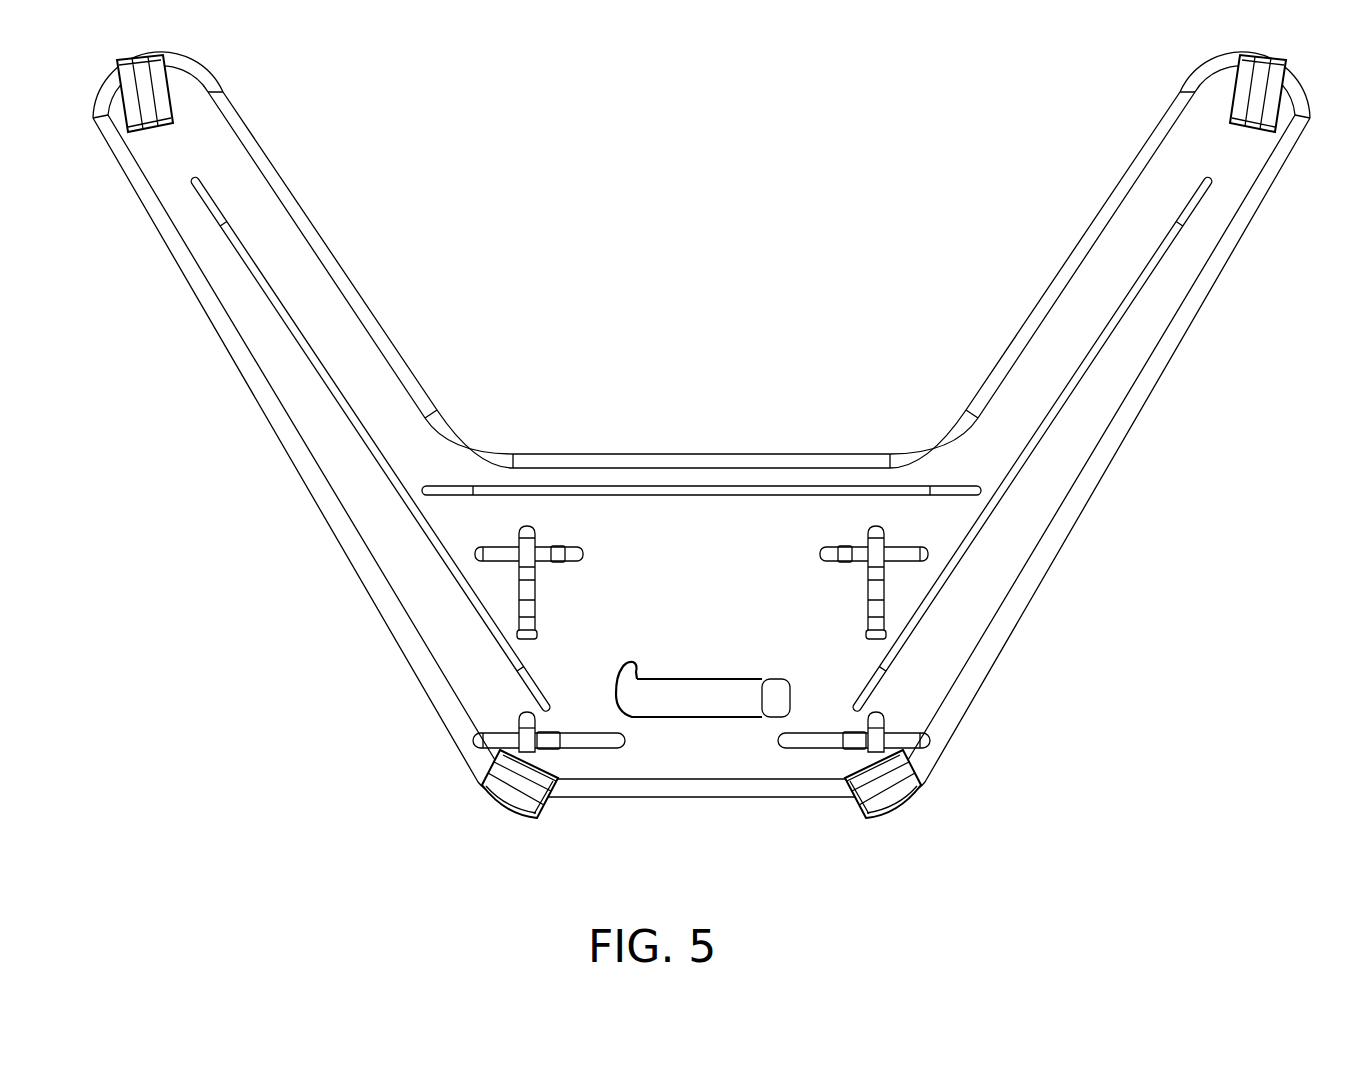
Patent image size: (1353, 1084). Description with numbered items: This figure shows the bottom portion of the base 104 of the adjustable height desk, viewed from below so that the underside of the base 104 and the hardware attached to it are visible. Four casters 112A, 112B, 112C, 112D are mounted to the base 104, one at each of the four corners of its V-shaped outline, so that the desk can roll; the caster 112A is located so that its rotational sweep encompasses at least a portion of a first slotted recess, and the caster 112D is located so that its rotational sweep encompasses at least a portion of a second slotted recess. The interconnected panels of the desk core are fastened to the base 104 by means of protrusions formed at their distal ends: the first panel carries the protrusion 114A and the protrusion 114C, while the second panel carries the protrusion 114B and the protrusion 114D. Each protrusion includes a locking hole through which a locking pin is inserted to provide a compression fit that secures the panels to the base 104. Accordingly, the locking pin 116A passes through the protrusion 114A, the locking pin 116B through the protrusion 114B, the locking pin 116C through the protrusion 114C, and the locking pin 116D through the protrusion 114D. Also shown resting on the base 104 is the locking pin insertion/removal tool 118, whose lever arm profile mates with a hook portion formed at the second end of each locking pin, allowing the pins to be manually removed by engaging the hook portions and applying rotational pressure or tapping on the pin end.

The base 104 is at (714, 448).
The caster 112A is at (498, 788).
The caster 112B is at (174, 80).
The caster 112C is at (1243, 52).
The caster 112D is at (893, 795).
The protrusion 114A is at (527, 712).
The protrusion 114B is at (873, 530).
The protrusion 114C is at (531, 531).
The protrusion 114D is at (887, 710).
The locking pin 116A is at (558, 750).
The locking pin 116B is at (840, 560).
The locking pin 116C is at (565, 563).
The locking pin 116D is at (845, 750).
The locking pin insertion/removal tool 118 is at (700, 688).